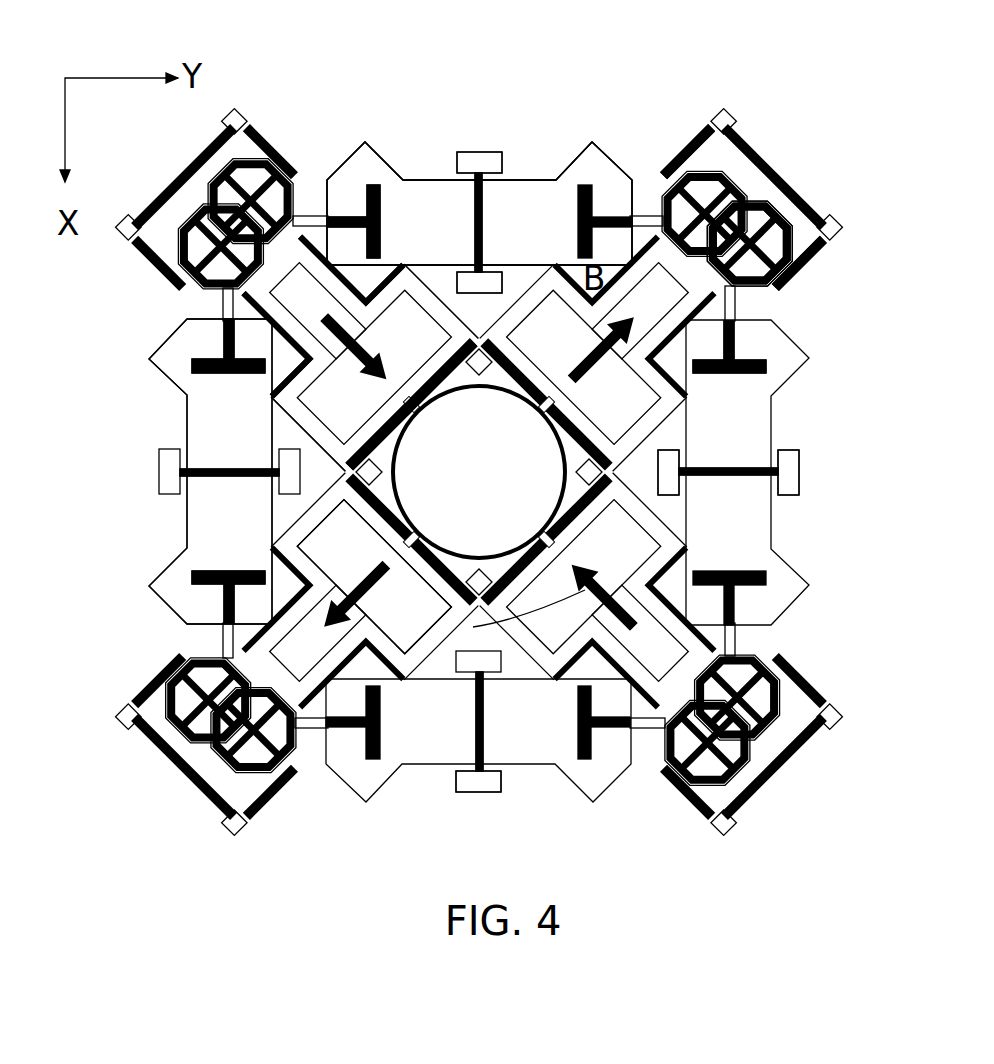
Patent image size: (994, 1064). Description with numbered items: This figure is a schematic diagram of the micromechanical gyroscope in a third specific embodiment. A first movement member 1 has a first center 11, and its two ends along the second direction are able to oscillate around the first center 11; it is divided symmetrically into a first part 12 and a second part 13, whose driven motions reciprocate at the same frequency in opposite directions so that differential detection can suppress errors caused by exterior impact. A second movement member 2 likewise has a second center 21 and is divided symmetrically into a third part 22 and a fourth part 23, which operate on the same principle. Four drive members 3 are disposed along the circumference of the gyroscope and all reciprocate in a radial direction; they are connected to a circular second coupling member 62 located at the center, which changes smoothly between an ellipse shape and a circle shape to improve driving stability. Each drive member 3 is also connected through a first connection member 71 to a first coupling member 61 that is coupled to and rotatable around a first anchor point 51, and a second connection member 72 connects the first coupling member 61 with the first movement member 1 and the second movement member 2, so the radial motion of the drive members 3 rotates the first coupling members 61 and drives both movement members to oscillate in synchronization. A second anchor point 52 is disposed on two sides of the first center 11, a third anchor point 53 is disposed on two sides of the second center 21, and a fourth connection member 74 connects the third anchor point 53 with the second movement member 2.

The first movement member 1 is at (390, 63).
The first center 11 is at (480, 222).
The first part 12 is at (403, 213).
The second part 13 is at (547, 213).
The second movement member 2 is at (78, 378).
The second center 21 is at (227, 480).
The third part 22 is at (218, 400).
The fourth part 23 is at (218, 550).
The drive member 3 is at (645, 635).
The first anchor point 51 is at (753, 233).
The second anchor point 52 is at (470, 782).
The third anchor point 53 is at (788, 475).
The first coupling member 61 is at (740, 280).
The second coupling member 62 is at (453, 602).
The first connection member 71 is at (665, 178).
The second connection member 72 is at (365, 205).
The fourth connection member 74 is at (753, 475).